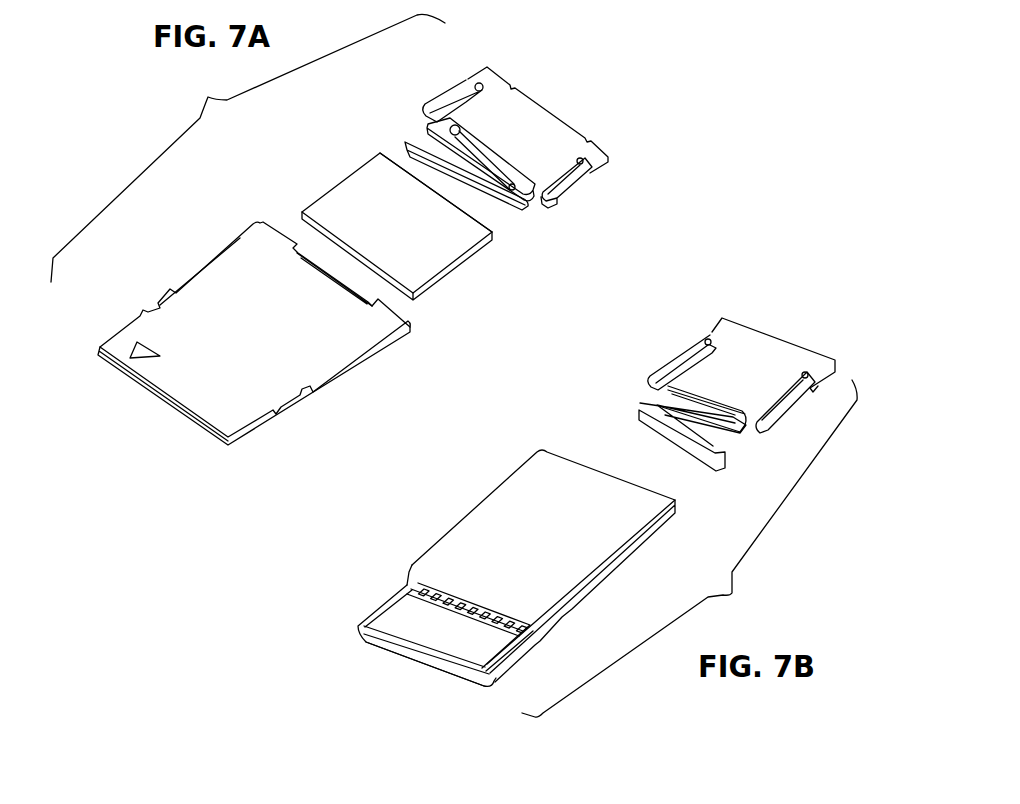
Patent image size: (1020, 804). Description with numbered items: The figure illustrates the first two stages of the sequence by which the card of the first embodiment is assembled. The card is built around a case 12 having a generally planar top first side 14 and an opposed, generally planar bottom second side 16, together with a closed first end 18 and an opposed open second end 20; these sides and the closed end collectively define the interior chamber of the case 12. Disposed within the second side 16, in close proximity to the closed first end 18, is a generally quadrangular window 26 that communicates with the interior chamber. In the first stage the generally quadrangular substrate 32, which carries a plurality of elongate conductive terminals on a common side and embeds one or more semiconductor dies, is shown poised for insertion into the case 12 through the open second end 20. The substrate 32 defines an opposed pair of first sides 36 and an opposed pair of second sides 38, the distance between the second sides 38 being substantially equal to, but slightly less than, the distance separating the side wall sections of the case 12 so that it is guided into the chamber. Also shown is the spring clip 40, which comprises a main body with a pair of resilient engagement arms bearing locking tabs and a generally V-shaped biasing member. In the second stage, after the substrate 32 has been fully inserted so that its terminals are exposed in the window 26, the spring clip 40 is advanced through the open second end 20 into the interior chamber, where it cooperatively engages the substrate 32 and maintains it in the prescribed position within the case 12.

In FIG. 7A, the case 12 is at (242, 340).
In FIG. 7B, the case 12 is at (483, 572).
In FIG. 7A, the first (top) side 14 is at (182, 365).
In FIG. 7B, the second (bottom) side 16 is at (448, 557).
In FIG. 7A, the closed first end 18 is at (165, 398).
In FIG. 7B, the closed first end 18 is at (430, 668).
In FIG. 7B, the open second end 20 is at (587, 465).
In FIG. 7B, the window 26 is at (403, 628).
In FIG. 7A, the substrate 32 is at (465, 272).
In FIG. 7B, the substrate 32 is at (447, 618).
In FIG. 7A, the first sides 36 is at (480, 218).
In FIG. 7A, the second sides 38 is at (430, 248).
In FIG. 7A, the spring clip 40 is at (580, 117).
In FIG. 7B, the spring clip 40 is at (805, 328).